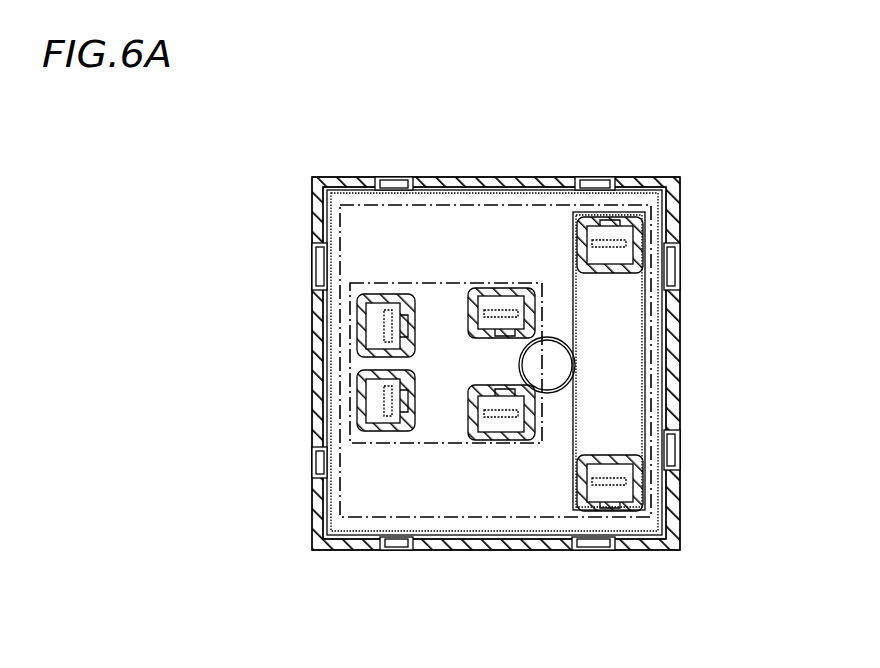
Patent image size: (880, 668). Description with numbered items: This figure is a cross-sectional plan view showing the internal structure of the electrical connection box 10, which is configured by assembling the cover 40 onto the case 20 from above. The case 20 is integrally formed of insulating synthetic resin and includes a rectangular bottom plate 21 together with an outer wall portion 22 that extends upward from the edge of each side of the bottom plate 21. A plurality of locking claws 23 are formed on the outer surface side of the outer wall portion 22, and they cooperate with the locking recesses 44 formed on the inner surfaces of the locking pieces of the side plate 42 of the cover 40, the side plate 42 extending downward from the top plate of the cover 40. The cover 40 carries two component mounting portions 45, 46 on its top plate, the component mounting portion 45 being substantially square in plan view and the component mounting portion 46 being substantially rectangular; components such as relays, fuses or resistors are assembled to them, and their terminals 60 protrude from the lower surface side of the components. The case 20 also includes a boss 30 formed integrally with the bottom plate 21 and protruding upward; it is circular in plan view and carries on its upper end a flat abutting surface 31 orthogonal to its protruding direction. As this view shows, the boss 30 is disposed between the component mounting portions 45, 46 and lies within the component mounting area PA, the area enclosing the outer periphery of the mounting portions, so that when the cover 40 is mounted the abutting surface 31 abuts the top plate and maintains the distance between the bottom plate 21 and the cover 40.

The electrical connection box 10 is at (284, 175).
The case 20 is at (664, 522).
The bottom plate 21 is at (528, 212).
The outer wall portion 22 is at (661, 190).
The locking claws 23 is at (392, 178).
The boss 30 is at (560, 335).
The abutting surface 31 is at (551, 365).
The cover 40 is at (312, 550).
The side plate 42 is at (322, 180).
The locking recesses 44 is at (430, 178).
The component mounting portion 45 is at (370, 448).
The component mounting portion 46 is at (567, 500).
The terminals 60 is at (385, 320).
The component mounting area PA is at (378, 548).